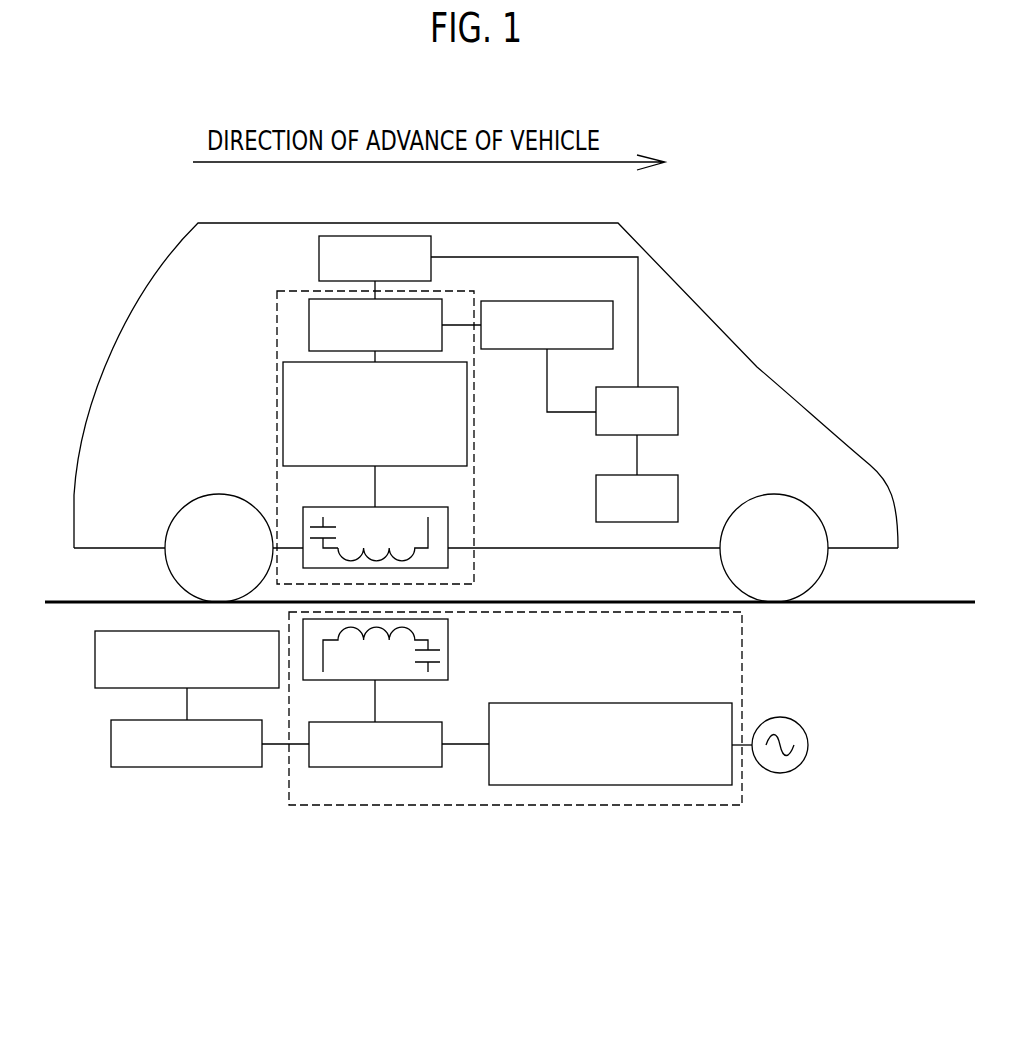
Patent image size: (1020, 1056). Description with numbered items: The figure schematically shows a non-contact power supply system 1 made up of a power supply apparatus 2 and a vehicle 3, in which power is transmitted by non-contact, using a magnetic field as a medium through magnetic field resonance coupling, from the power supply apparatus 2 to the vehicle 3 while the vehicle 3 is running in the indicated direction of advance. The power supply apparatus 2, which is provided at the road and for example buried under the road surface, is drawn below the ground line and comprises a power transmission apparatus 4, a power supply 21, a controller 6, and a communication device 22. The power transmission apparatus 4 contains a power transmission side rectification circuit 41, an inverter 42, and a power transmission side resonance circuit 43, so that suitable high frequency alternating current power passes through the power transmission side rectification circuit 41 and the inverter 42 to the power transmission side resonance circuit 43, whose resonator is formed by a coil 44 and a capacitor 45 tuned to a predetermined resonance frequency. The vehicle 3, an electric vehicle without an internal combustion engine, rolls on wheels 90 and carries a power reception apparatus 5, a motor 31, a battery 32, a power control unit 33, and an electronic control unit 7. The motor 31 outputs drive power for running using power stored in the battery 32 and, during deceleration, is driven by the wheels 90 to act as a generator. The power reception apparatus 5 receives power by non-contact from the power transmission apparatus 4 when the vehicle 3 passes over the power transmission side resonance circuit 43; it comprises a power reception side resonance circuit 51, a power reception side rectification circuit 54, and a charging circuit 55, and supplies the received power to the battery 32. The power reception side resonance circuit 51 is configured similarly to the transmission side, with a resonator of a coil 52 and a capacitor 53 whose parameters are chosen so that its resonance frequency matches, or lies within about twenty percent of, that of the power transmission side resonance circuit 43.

The non-contact power supply system 1 is at (766, 222).
The power supply apparatus 2 is at (667, 827).
The vehicle 3 is at (713, 322).
The power transmission apparatus 4 is at (742, 650).
The power reception apparatus 5 is at (300, 290).
The controller 6 is at (182, 767).
The electronic control unit (ECU) 7 is at (319, 254).
The power supply 21 is at (808, 745).
The communication device 22 is at (108, 690).
The motor 31 is at (596, 500).
The battery 32 is at (540, 300).
The power control unit (PCU) 33 is at (678, 408).
The power transmission side rectification circuit 41 is at (545, 785).
The inverter 42 is at (375, 767).
The power transmission side resonance circuit 43 is at (450, 636).
The coil 44 is at (352, 672).
The capacitor 45 is at (435, 660).
The power reception side resonance circuit 51 is at (448, 535).
The coil 52 is at (382, 530).
The capacitor 53 is at (330, 525).
The power reception side rectification circuit 54 is at (283, 453).
The charging circuit 55 is at (309, 325).
The wheels 90 is at (175, 568).